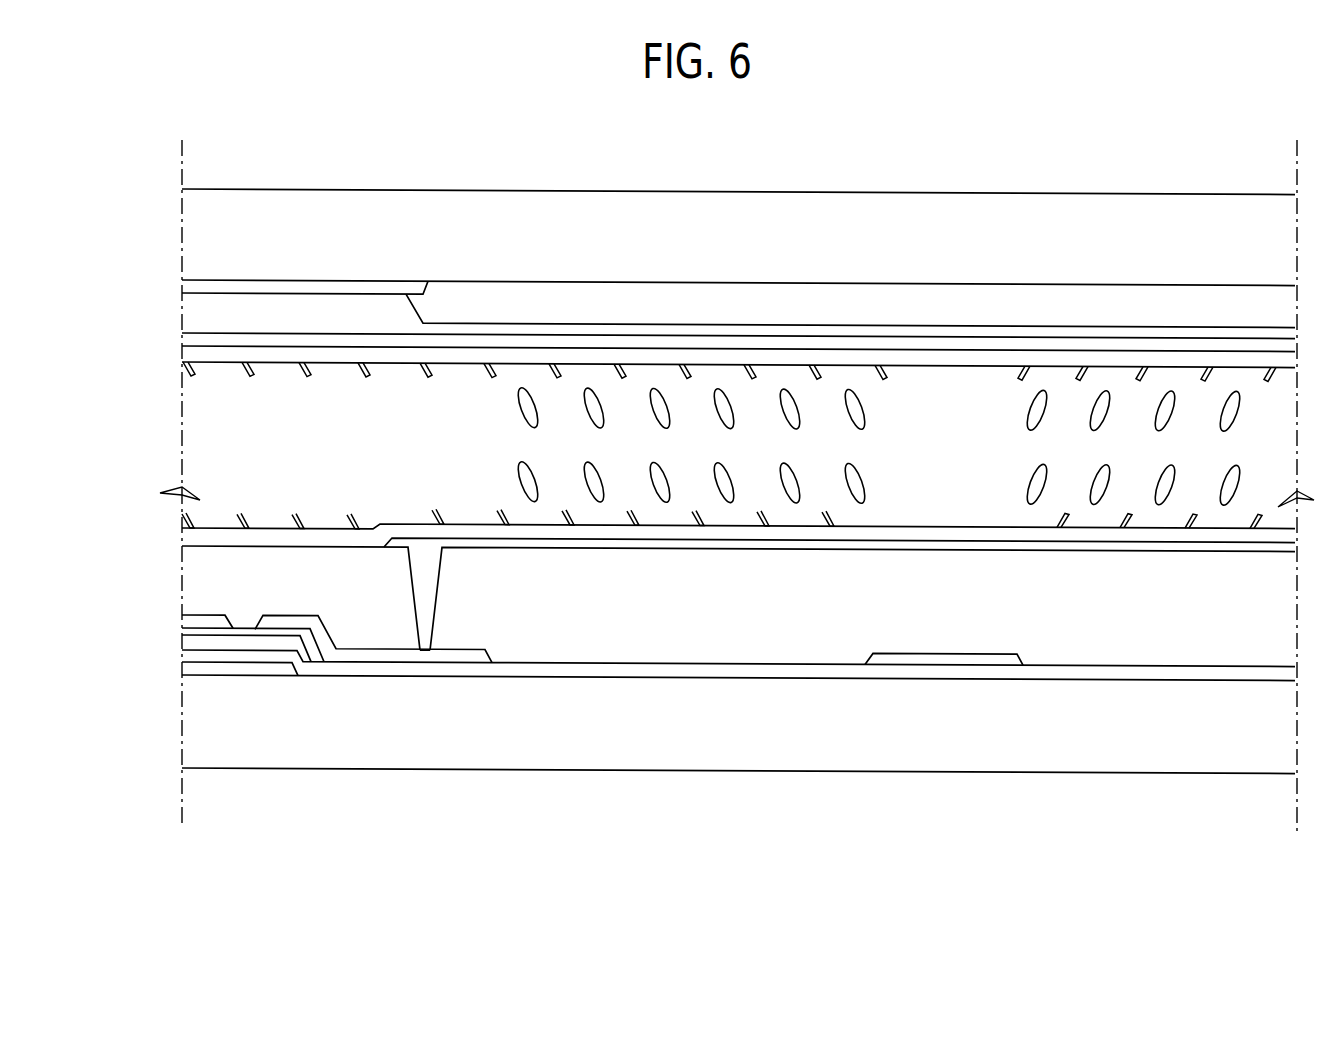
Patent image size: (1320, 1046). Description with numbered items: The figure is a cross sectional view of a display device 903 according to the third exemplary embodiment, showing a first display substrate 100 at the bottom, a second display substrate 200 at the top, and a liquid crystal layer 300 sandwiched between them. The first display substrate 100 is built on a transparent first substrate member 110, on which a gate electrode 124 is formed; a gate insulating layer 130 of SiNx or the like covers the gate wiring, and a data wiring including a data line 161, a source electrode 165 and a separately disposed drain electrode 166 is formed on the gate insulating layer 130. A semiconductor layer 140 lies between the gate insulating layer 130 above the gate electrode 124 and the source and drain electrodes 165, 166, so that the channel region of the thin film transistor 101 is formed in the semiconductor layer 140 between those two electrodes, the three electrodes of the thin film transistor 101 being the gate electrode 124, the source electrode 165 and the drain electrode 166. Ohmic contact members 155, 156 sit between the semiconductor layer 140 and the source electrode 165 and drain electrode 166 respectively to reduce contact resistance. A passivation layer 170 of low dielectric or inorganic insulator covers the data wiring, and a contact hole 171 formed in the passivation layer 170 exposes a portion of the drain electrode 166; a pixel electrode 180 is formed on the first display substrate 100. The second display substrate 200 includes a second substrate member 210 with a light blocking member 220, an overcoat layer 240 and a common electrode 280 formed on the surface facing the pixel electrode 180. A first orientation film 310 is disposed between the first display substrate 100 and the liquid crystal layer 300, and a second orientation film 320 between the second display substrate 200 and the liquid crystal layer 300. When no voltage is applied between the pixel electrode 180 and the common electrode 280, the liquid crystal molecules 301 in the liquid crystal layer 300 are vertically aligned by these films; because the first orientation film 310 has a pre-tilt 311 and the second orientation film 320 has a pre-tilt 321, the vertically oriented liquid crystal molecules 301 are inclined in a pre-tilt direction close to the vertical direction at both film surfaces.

The display device 903 is at (779, 118).
The second display substrate 200 is at (266, 173).
The second substrate member 210 is at (485, 210).
The light blocking member 220 is at (388, 290).
The overcoat layer 240 is at (320, 315).
The common electrode 280 is at (655, 345).
The second orientation film 320 is at (195, 352).
The pre-tilt 321 is at (207, 382).
The liquid crystal layer 300 is at (163, 443).
The liquid crystal molecules 301 is at (1030, 410).
The first display substrate 100 is at (1236, 790).
The thin film transistor 101 is at (405, 867).
The first substrate member 110 is at (1130, 745).
The gate electrode 124 is at (248, 665).
The semiconductor layer 140 is at (265, 642).
The ohmic contact member 155 is at (218, 632).
The ohmic contact member 156 is at (303, 655).
The source electrode 165 is at (203, 622).
The drain electrode 166 is at (353, 655).
The gate insulating layer 130 is at (540, 668).
The data line 161 is at (980, 658).
The passivation layer 170 is at (743, 635).
The contact hole 171 is at (424, 606).
The pixel electrode 180 is at (643, 540).
The first orientation film 310 is at (195, 540).
The pre-tilt 311 is at (190, 521).